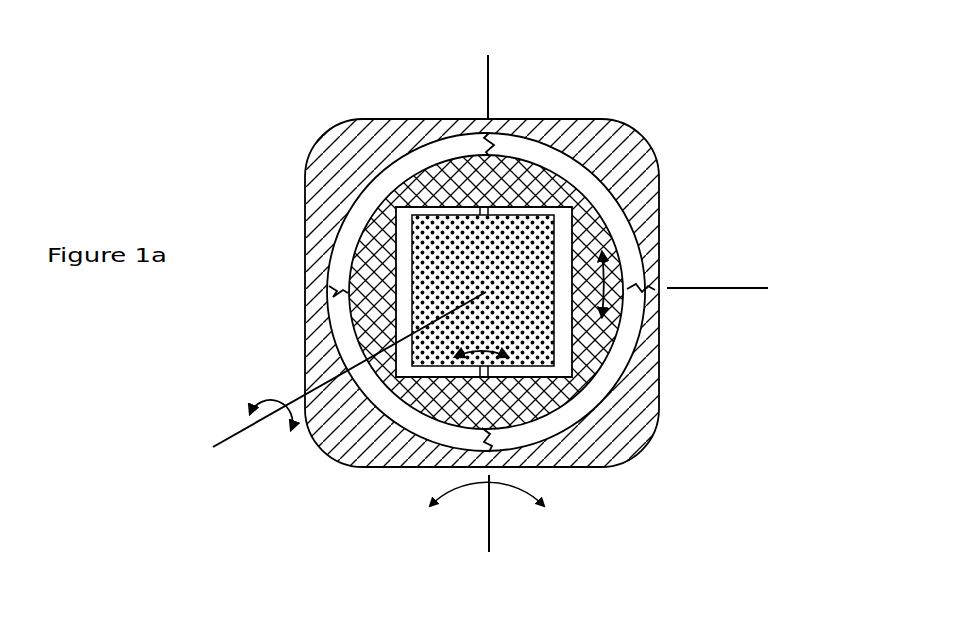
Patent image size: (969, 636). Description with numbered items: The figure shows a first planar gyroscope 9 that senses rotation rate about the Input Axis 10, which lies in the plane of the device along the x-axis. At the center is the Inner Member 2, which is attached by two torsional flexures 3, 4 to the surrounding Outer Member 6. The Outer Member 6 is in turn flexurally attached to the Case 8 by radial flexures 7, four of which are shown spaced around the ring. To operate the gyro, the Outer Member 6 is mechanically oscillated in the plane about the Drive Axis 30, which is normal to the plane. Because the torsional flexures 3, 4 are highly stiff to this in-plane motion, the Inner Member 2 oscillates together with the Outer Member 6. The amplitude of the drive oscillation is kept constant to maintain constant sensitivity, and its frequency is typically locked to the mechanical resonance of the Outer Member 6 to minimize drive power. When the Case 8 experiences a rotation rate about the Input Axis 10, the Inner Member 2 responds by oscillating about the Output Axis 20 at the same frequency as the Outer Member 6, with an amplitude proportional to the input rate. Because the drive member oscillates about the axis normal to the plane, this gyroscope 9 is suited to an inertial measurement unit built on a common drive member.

The inner member 2 is at (498, 265).
The torsional flexure 3 is at (480, 213).
The torsional flexure 4 is at (477, 377).
The outer member 6 is at (425, 192).
The radial flexure 7 is at (500, 133).
The case 8 is at (637, 417).
The planar gyroscope 9 is at (755, 80).
The input axis 10 is at (703, 278).
The output axis 20 is at (493, 537).
The drive axis 30 is at (212, 442).